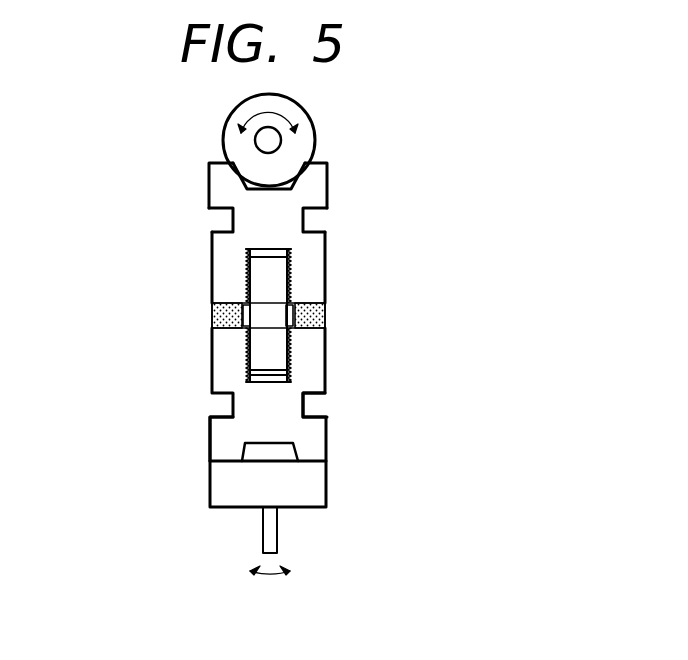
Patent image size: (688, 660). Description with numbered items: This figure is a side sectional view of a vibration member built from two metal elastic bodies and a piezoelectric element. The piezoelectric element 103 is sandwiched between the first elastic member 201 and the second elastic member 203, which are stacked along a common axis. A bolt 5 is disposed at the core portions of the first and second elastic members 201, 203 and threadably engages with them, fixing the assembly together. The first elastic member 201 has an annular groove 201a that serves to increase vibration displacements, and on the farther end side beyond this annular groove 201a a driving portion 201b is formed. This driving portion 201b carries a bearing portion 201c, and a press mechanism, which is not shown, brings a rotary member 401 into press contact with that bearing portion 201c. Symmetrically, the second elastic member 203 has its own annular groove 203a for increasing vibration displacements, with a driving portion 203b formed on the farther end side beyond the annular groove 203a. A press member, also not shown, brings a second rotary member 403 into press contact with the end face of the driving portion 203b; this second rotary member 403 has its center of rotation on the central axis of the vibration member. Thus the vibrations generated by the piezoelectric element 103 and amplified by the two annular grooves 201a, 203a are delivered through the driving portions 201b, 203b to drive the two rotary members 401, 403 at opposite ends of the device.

The bolt 5 is at (276, 279).
The piezoelectric element 103 is at (313, 315).
The first elastic member 201 is at (282, 206).
The annular groove 201a is at (313, 221).
The driving portion 201b is at (322, 190).
The bearing portion 201c is at (240, 178).
The second elastic member 203 is at (273, 394).
The annular groove 203a is at (313, 405).
The driving portion 203b is at (217, 439).
The rotary member 401 is at (307, 146).
The second rotary member 403 is at (317, 482).